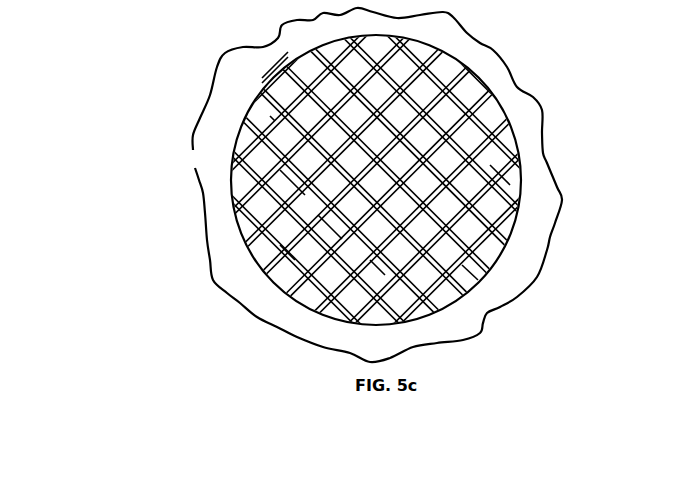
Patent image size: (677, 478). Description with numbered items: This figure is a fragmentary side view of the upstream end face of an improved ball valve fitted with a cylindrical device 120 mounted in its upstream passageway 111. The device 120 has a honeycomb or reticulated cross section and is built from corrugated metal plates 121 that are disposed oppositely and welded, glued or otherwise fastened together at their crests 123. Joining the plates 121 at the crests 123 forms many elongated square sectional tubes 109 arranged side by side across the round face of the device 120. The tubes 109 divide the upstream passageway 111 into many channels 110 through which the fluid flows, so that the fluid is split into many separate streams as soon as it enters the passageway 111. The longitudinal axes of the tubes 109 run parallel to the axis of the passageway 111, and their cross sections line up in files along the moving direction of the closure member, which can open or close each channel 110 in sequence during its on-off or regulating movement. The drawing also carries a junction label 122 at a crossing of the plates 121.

The elongated square sectional tubes 109 is at (378, 266).
The channels 110 is at (350, 65).
The upstream passageway 111 is at (470, 272).
The cylindrical device 120 is at (512, 102).
The corrugated metal plates 121 is at (275, 122).
The strand junction 122 is at (470, 172).
The crests 123 is at (330, 227).